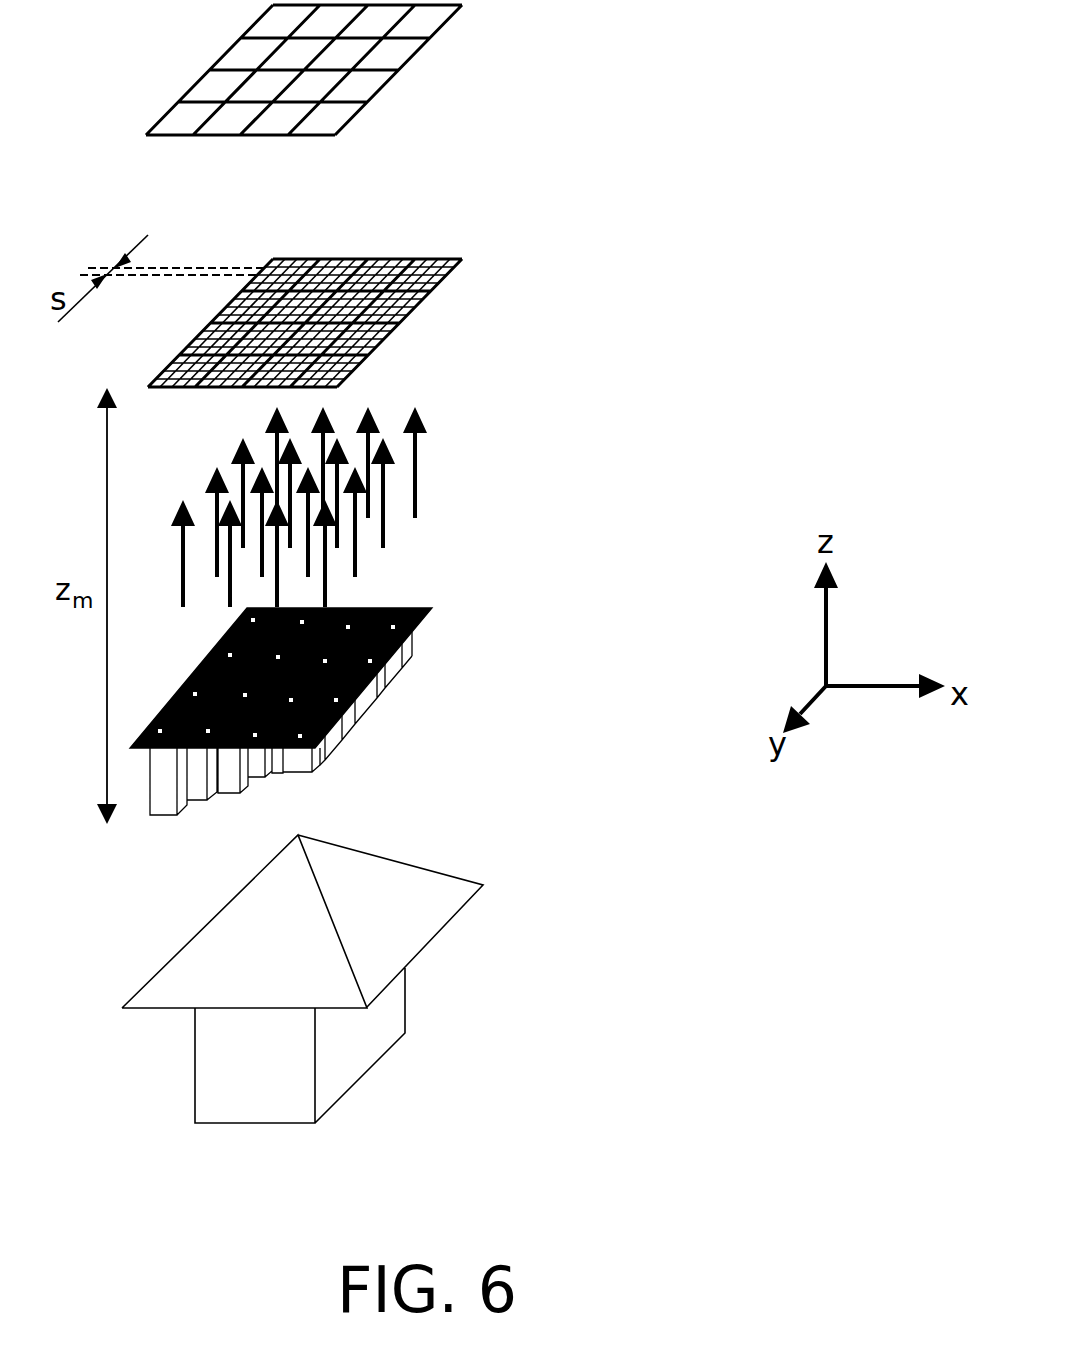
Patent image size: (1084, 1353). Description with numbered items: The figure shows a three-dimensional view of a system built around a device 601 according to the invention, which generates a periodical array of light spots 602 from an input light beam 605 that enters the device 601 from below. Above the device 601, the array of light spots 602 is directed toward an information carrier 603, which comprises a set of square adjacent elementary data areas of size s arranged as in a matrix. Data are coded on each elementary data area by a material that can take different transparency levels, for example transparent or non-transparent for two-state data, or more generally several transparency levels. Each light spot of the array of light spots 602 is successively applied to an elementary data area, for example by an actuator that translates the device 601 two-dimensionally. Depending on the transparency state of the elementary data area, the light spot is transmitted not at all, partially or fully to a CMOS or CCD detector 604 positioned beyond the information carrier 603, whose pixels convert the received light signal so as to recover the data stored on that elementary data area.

The device 601 is at (425, 620).
The periodical array of light spots 602 is at (428, 448).
The information carrier 603 is at (410, 315).
The CMOS or CCD detector 604 is at (417, 53).
The input light beam 605 is at (405, 1010).